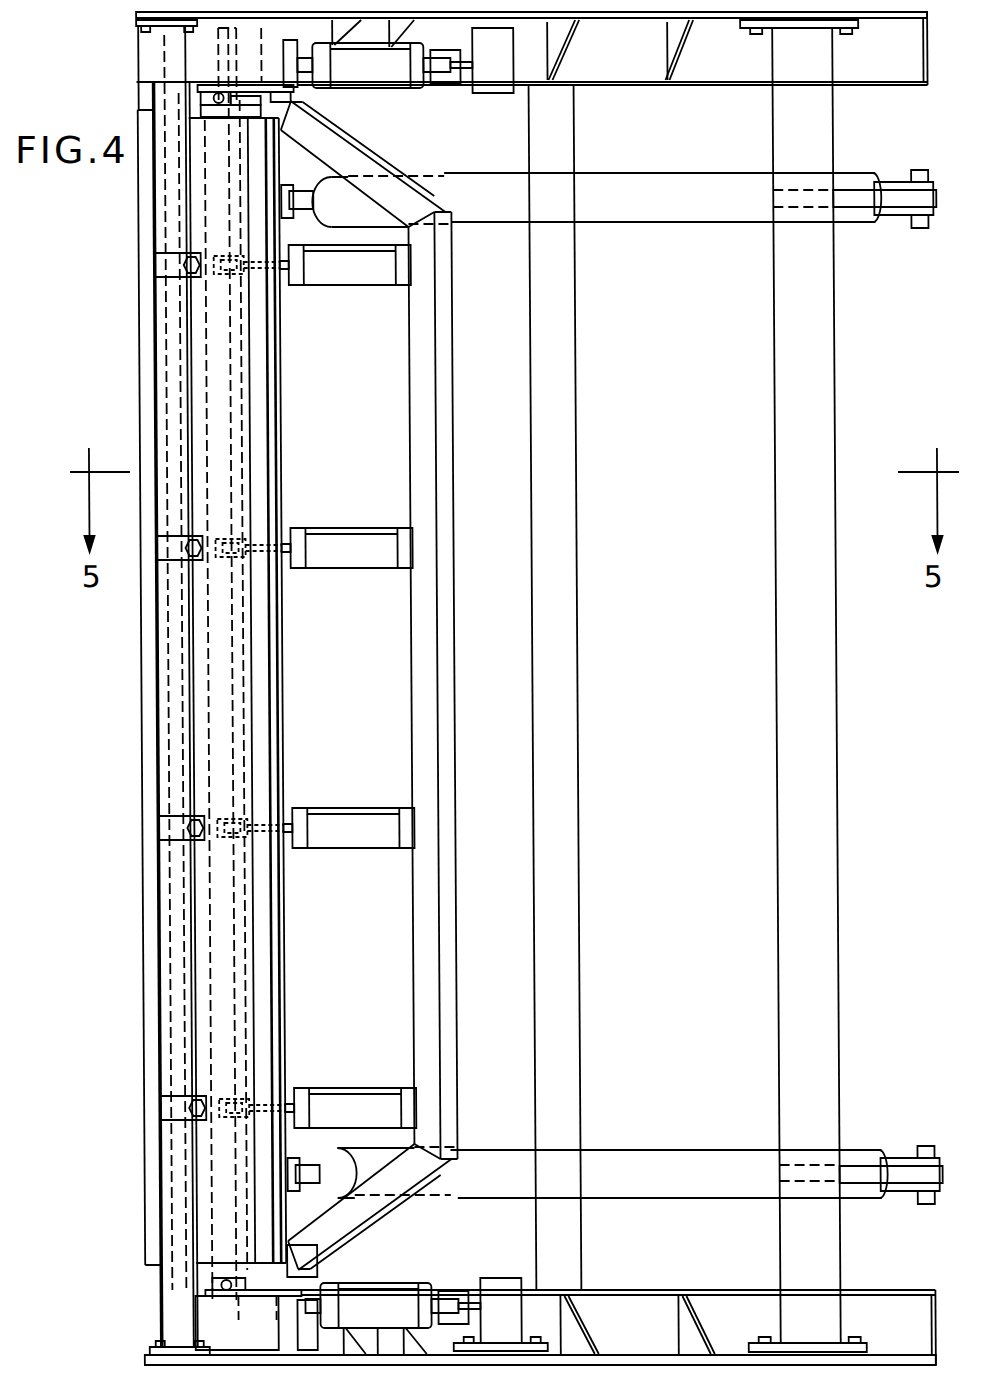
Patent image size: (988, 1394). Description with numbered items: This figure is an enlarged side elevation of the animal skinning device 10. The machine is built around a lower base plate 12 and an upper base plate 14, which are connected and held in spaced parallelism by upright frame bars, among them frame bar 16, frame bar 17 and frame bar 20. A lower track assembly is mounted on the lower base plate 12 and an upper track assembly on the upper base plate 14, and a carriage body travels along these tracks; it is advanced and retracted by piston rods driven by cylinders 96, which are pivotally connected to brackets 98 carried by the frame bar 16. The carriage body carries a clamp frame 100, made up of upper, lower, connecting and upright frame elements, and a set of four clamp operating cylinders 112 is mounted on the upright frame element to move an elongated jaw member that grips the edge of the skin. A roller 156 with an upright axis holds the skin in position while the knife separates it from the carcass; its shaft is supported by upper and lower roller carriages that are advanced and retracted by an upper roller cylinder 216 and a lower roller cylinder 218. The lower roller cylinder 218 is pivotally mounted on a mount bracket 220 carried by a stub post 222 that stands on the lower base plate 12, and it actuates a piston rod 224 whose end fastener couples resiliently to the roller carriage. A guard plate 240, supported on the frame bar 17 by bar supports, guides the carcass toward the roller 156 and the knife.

The animal skinning device 10 is at (888, 944).
The lower base plate 12 is at (629, 1355).
The upper base plate 14 is at (622, 14).
The frame bar 16 is at (823, 750).
The frame bar 17 is at (160, 1314).
The frame bar 20 is at (558, 130).
The cylinders 96 is at (668, 205).
The brackets 98 is at (847, 1172).
The clamp frame 100 is at (458, 1098).
The clamp operating cylinders 112 is at (331, 1103).
The roller 156 is at (262, 748).
The upper roller cylinder 216 is at (370, 78).
The lower roller cylinder 218 is at (349, 1307).
The mount bracket 220 is at (455, 1313).
The stub post 222 is at (479, 1293).
The piston rod 224 is at (299, 1313).
The guard plate 240 is at (150, 910).